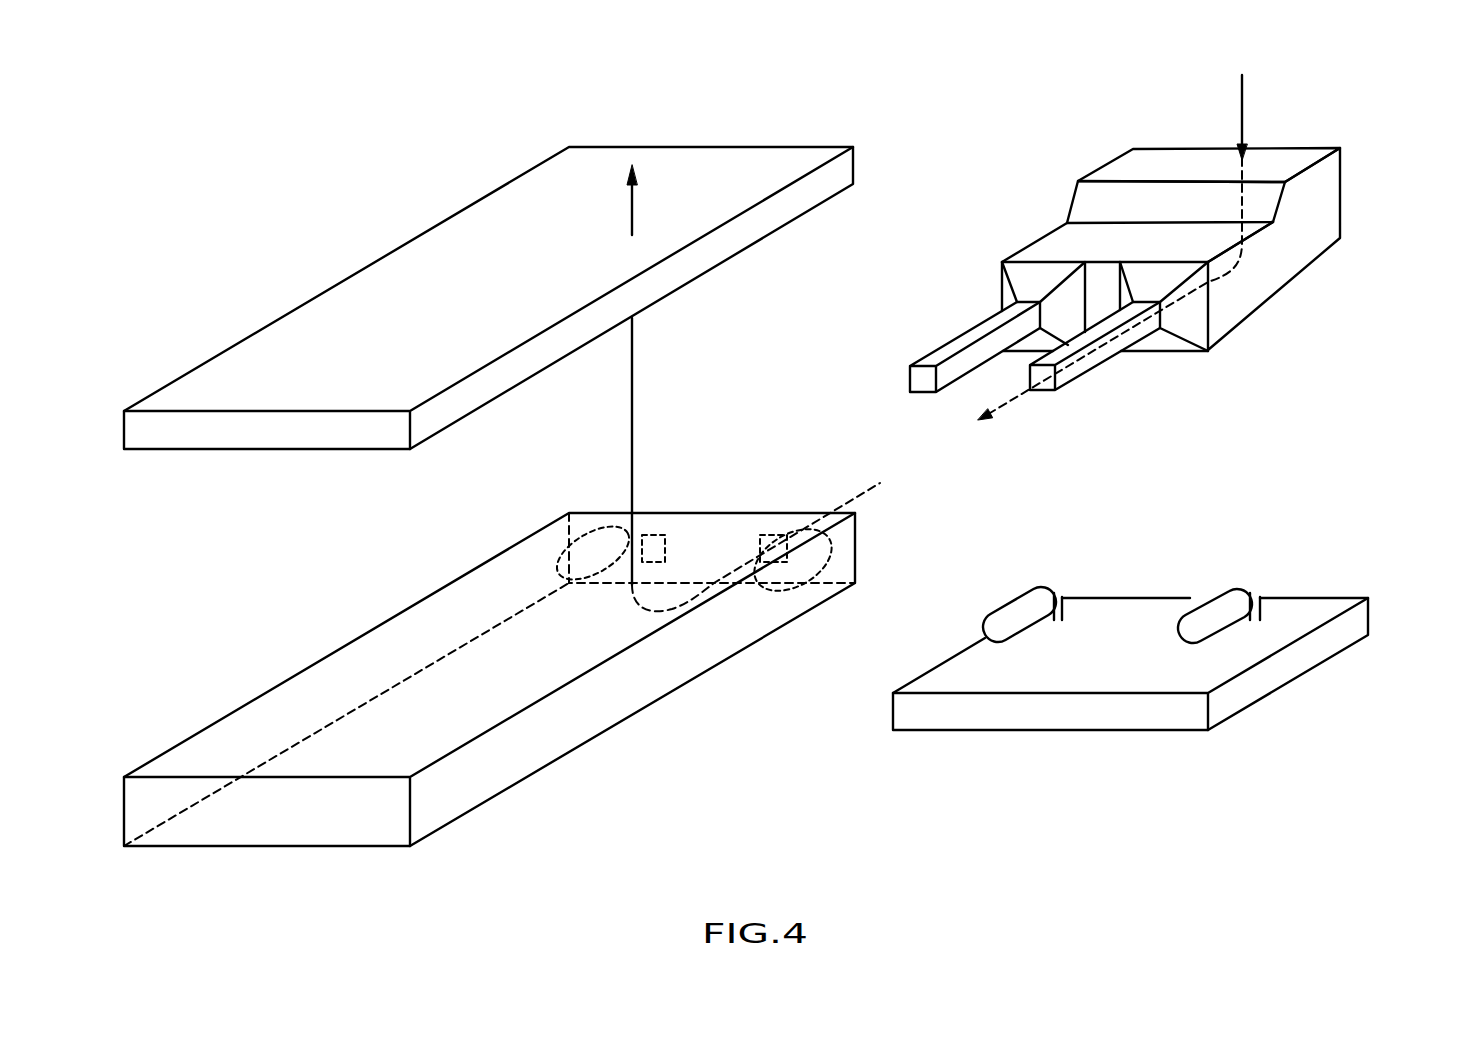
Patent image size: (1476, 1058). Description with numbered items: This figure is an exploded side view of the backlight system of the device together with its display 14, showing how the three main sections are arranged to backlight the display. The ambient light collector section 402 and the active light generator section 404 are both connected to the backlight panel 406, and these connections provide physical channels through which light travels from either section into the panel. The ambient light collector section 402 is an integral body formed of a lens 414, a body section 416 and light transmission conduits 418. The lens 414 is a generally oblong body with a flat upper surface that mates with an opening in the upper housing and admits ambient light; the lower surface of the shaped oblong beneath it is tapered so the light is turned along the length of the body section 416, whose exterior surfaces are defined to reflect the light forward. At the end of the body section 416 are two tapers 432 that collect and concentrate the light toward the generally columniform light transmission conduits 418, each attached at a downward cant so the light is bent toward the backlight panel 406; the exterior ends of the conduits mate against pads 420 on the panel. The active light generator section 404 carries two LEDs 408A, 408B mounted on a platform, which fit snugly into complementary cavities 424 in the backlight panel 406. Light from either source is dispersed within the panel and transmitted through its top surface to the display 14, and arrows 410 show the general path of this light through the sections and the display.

The display 14 is at (185, 437).
The ambient light collector section 402 is at (1187, 234).
The active light generator section 404 is at (1030, 718).
The backlight panel 406 is at (554, 732).
The LED 408A is at (998, 613).
The LED 408B is at (1233, 595).
The arrows 410 is at (632, 212).
The lens 414 is at (1139, 155).
The body section 416 is at (1250, 287).
The light transmission conduits 418 is at (966, 339).
The pads 420 is at (655, 538).
The cavities 424 is at (588, 570).
The tapers 432 is at (1031, 273).